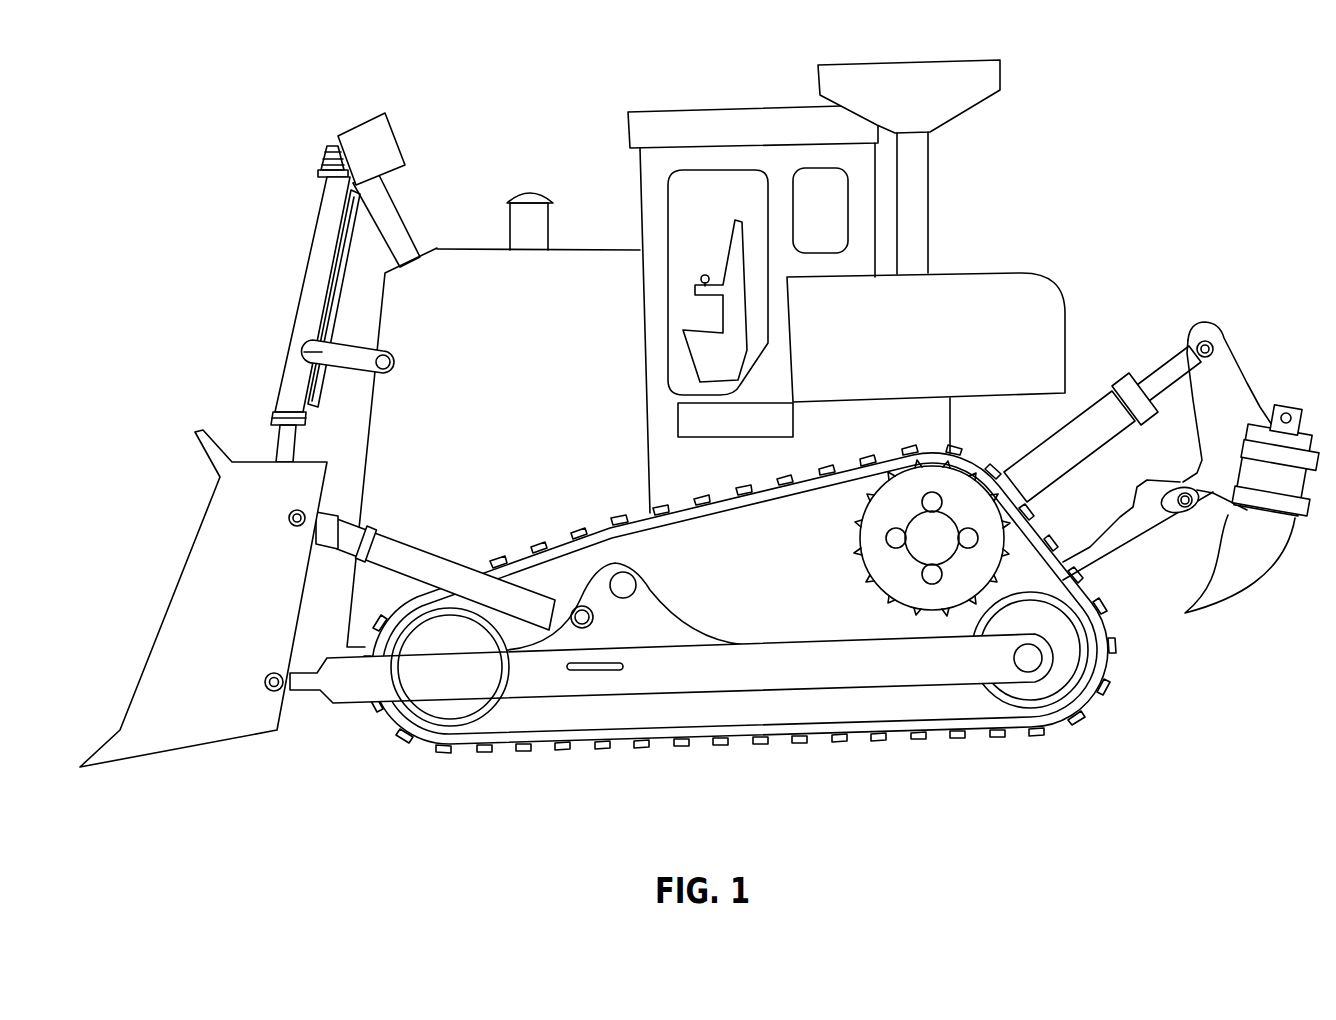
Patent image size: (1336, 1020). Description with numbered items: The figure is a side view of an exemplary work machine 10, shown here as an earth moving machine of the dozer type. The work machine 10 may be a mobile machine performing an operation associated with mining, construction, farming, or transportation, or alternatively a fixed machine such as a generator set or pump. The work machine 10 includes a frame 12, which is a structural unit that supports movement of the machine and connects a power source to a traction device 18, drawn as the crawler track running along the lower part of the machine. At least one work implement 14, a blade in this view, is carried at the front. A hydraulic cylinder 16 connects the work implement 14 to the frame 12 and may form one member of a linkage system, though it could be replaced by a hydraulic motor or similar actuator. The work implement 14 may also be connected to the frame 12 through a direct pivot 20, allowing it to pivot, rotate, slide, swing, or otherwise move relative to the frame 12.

The work machine 10 is at (699, 450).
The frame 12 is at (437, 690).
The work implement 14 is at (240, 702).
The hydraulic cylinder 16 is at (412, 537).
The traction device 18 is at (1052, 720).
The direct pivot 20 is at (275, 672).